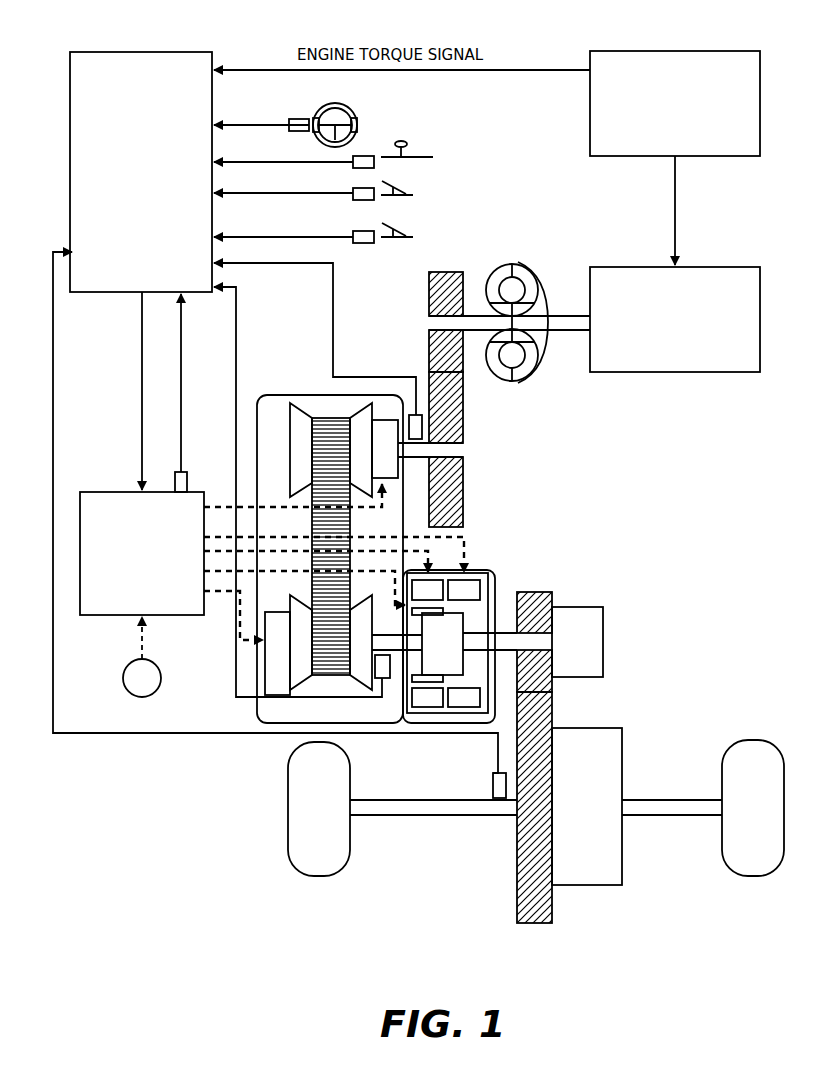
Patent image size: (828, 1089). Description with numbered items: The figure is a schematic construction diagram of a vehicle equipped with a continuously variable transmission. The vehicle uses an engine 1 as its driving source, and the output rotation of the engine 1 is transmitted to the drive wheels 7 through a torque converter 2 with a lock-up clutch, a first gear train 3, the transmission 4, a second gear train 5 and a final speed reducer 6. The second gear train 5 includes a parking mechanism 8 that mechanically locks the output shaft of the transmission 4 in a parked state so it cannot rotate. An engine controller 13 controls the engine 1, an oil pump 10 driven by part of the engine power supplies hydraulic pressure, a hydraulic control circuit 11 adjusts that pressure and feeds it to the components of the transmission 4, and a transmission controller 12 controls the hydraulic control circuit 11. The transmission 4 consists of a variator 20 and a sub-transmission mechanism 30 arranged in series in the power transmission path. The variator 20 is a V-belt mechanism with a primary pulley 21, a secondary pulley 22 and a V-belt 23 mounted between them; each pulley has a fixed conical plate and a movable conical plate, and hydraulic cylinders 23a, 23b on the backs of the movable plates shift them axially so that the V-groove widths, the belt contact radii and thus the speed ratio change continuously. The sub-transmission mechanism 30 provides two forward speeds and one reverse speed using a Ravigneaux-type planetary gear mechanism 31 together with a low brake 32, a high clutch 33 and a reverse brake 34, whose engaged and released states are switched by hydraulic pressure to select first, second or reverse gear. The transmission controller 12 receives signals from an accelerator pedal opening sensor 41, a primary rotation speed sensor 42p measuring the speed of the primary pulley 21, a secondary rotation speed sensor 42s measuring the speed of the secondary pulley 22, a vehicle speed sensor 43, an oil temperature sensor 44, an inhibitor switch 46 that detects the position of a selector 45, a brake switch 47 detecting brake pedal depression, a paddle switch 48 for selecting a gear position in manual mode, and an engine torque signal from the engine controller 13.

The engine 1 is at (745, 283).
The torque converter 2 is at (538, 280).
The first gear train 3 is at (444, 268).
The continuously variable transmission 4 is at (310, 512).
The second gear train 5 is at (535, 930).
The final speed reducer 6 is at (585, 875).
The drive wheels 7 is at (322, 862).
The parking mechanism 8 is at (595, 632).
The oil pump 10 is at (124, 673).
The hydraulic control circuit 11 is at (98, 505).
The transmission controller 12 is at (200, 58).
The engine controller 13 is at (748, 58).
The variator 20 is at (278, 420).
The primary pulley 21 is at (300, 450).
The secondary pulley 22 is at (300, 658).
The V-belt 23 is at (335, 418).
The hydraulic cylinder 23a is at (383, 428).
The hydraulic cylinder 23b is at (270, 648).
The sub-transmission mechanism 30 is at (474, 605).
The Ravigneaux-type planetary gear mechanism 31 is at (470, 625).
The low brake 32 is at (432, 588).
The high clutch 33 is at (425, 695).
The reverse brake 34 is at (466, 590).
The accelerator pedal opening sensor 41 is at (374, 200).
The primary rotation speed sensor 42p is at (416, 414).
The secondary rotation speed sensor 42s is at (376, 672).
The vehicle speed sensor 43 is at (493, 785).
The oil temperature sensor 44 is at (187, 482).
The selector 45 is at (403, 138).
The inhibitor switch 46 is at (366, 158).
The brake switch 47 is at (374, 243).
The paddle switch 48 is at (300, 118).